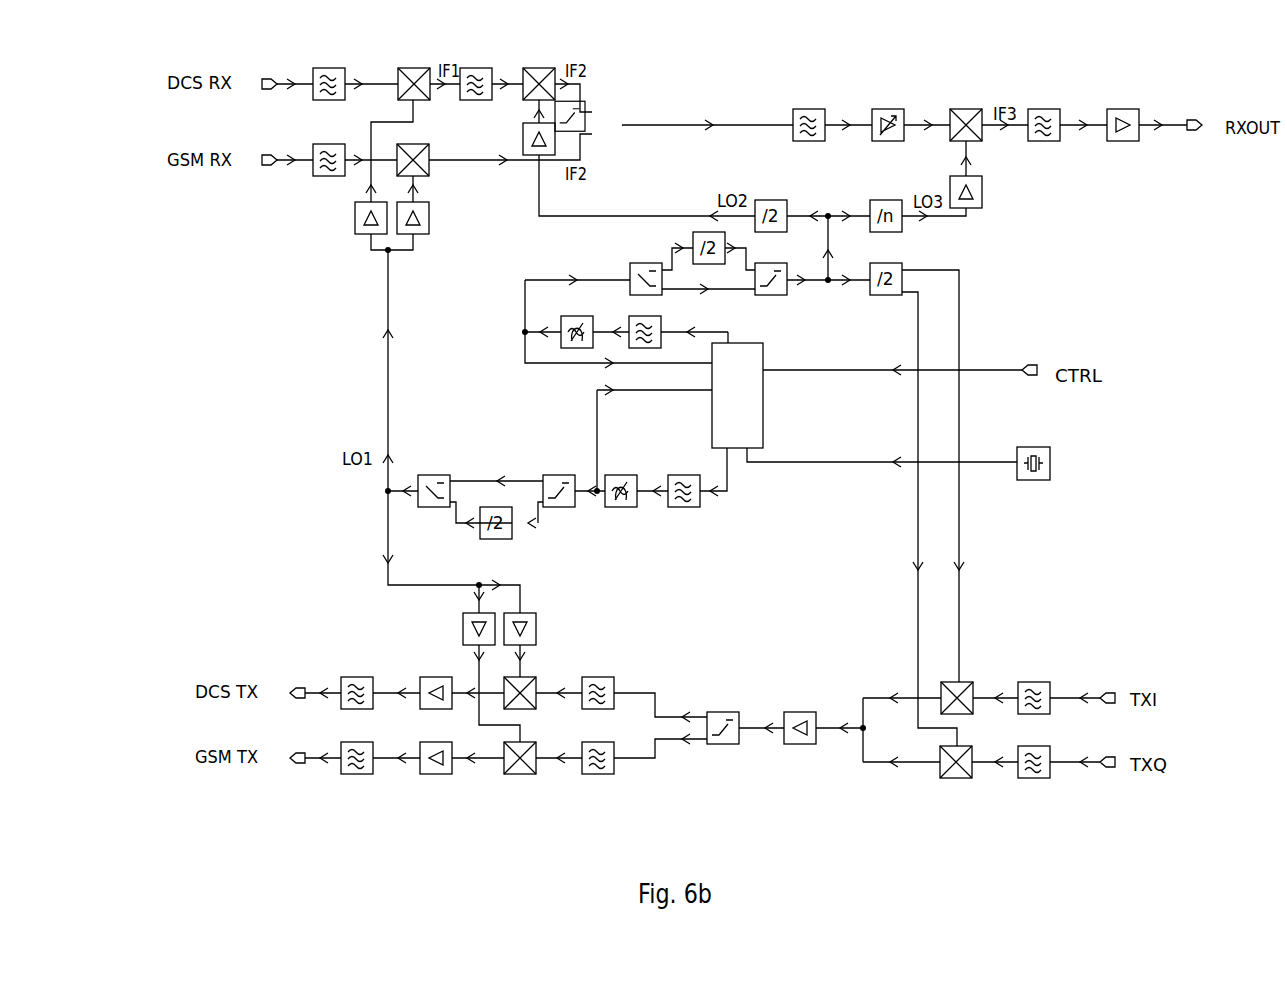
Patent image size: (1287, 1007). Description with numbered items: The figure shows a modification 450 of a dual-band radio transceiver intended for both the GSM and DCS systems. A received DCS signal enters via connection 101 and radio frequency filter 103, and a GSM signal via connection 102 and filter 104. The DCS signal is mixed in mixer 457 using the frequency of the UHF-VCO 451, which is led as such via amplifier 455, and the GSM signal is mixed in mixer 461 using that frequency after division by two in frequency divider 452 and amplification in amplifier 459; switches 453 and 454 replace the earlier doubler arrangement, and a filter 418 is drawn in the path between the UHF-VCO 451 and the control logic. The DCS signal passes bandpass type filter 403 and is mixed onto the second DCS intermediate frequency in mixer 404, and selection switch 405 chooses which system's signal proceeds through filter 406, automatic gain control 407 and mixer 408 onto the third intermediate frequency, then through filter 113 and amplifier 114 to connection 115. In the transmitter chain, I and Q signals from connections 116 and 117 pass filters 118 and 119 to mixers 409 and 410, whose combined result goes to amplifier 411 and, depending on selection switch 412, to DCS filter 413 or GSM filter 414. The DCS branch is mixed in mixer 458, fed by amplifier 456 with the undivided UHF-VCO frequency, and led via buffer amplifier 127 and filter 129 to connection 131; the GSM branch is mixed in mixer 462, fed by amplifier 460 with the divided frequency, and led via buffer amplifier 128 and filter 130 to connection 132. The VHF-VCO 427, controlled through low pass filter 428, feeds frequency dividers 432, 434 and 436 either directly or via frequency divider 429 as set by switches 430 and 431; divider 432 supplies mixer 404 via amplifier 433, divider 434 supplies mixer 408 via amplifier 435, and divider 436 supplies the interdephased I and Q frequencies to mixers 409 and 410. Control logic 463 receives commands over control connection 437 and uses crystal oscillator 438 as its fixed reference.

The connection 101 is at (265, 79).
The connection 102 is at (265, 165).
The radio frequency filter 103 is at (330, 68).
The radio frequency filter 104 is at (330, 176).
The filter 113 is at (1050, 109).
The amplifier 114 is at (1130, 109).
The connection 115 is at (1200, 120).
The connection 116 is at (1108, 693).
The connection 117 is at (1108, 768).
The filter 118 is at (1036, 682).
The filter 119 is at (1033, 778).
The buffer amplifier 127 is at (447, 677).
The buffer amplifier 128 is at (443, 774).
The filter 129 is at (372, 677).
The filter 130 is at (370, 774).
The connection 131 is at (298, 688).
The connection 132 is at (298, 763).
The bandpass type filter 403 is at (475, 68).
The mixer 404 is at (540, 68).
The selection switch 405 is at (613, 108).
The filter 406 is at (816, 109).
The automatic gain control 407 is at (893, 109).
The mixer 408 is at (973, 109).
The mixer 409 is at (962, 682).
The mixer 410 is at (955, 778).
The amplifier 411 is at (800, 744).
The selection switch 412 is at (723, 744).
The DCS filter 413 is at (608, 677).
The GSM filter 414 is at (605, 774).
The loop filter 418 is at (686, 475).
The VHF-VCO 427 is at (565, 316).
The low pass filter 428 is at (633, 316).
The frequency divider 429 is at (693, 233).
The switch 430 is at (640, 263).
The switch 431 is at (787, 295).
The frequency divider 432 is at (766, 200).
The amplifier 433 is at (523, 127).
The frequency divider 434 is at (902, 230).
The amplifier 435 is at (982, 178).
The frequency divider 436 is at (888, 296).
The control connection 437 is at (1028, 360).
The crystal oscillator 438 is at (1052, 466).
The modification of the radio transceiver 450 is at (322, 406).
The UHF-VCO 451 is at (628, 475).
The frequency divider 452 is at (500, 539).
The switch 453 is at (558, 475).
The switch 454 is at (435, 475).
The amplifier 455 is at (355, 222).
The amplifier 456 is at (532, 614).
The mixer 457 is at (413, 68).
The mixer 458 is at (527, 677).
The amplifier 459 is at (429, 222).
The amplifier 460 is at (463, 617).
The mixer 461 is at (429, 163).
The mixer 462 is at (528, 774).
The control logic 463 is at (753, 417).